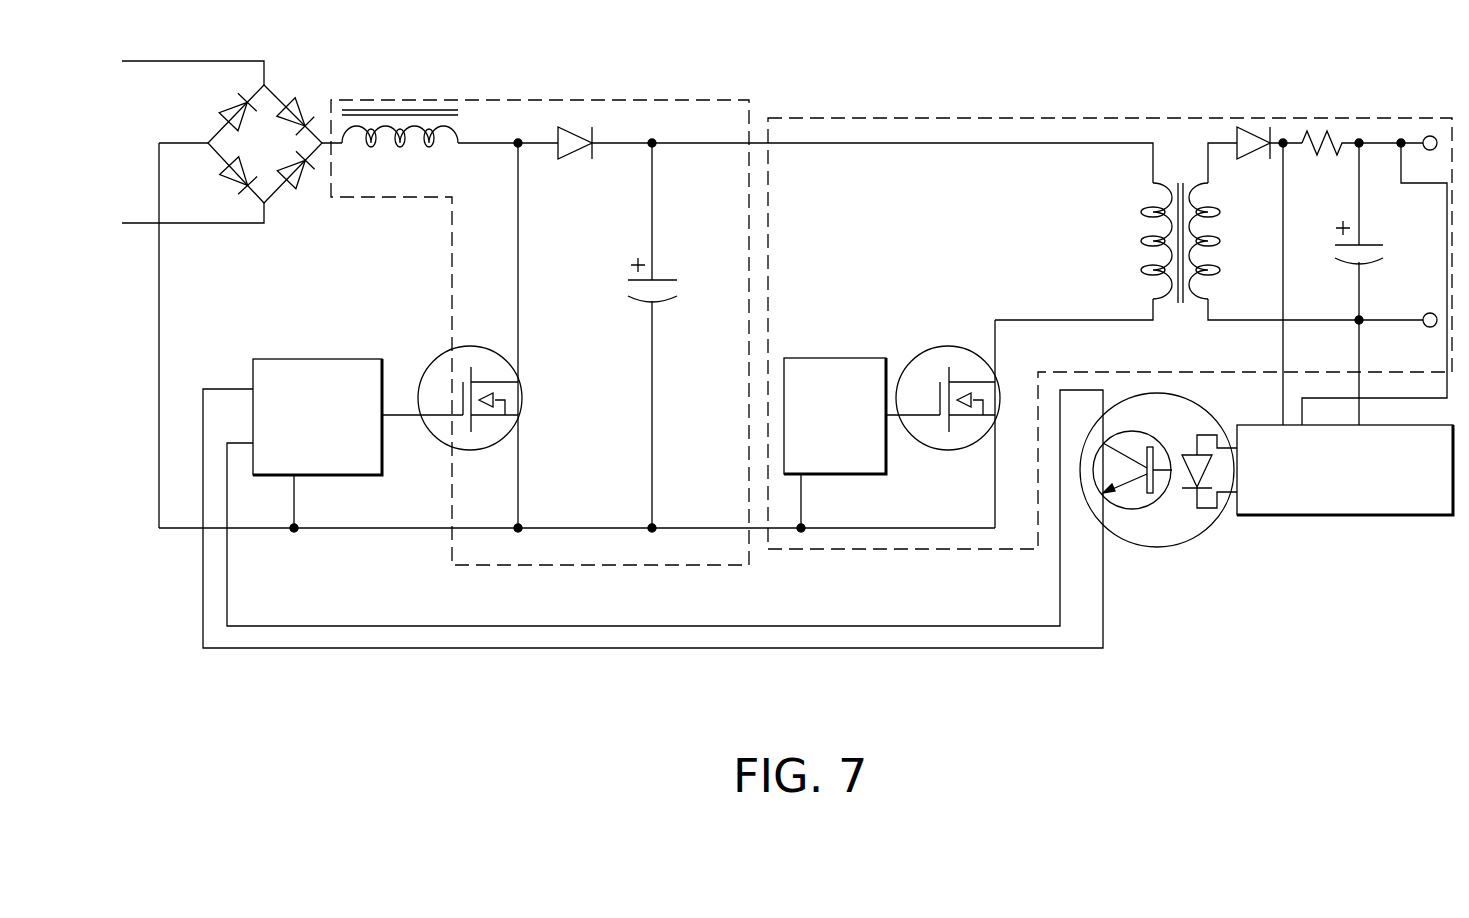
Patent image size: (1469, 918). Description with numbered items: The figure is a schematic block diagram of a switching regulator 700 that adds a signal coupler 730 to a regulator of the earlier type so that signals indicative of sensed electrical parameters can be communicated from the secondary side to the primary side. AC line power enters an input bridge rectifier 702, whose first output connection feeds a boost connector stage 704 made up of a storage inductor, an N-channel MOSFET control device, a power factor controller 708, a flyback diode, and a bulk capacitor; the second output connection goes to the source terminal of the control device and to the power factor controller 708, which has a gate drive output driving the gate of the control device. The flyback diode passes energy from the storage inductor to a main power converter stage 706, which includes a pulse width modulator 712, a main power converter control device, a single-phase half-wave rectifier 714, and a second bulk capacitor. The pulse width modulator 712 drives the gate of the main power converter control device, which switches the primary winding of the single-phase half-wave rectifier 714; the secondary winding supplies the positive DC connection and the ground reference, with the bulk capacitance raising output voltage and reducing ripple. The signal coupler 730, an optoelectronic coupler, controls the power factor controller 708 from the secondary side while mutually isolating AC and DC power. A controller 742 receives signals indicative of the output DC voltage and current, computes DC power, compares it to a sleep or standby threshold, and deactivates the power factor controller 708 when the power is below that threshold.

The switching regulator 700 is at (789, 345).
The input bridge rectifier 702 is at (298, 92).
The boost connector stage 704 is at (570, 100).
The main power converter stage 706 is at (870, 118).
The power factor controller 708 is at (358, 443).
The pulse width modulator 712 is at (862, 443).
The single-phase half-wave rectifier 714 is at (1183, 304).
The signal coupler 730 is at (1193, 548).
The controller 742 is at (1345, 470).